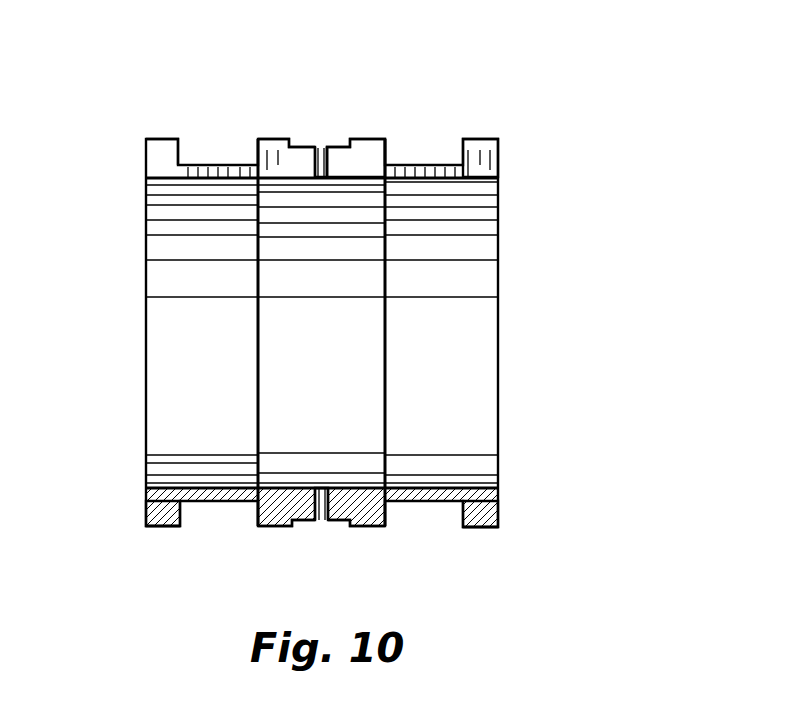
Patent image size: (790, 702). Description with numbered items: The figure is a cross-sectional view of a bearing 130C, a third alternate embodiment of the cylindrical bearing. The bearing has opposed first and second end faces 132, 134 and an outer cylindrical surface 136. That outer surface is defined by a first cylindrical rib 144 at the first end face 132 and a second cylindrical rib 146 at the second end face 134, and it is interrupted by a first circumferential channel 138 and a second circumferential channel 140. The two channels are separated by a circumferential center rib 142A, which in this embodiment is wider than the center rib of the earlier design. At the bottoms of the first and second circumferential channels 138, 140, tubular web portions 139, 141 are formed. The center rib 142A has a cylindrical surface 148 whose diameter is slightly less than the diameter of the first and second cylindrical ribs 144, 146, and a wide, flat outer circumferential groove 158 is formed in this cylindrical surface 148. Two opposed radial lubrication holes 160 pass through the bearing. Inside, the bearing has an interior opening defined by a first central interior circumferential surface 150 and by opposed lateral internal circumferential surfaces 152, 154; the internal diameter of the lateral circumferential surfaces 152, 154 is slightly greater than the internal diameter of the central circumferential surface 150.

The bearing 130C is at (512, 162).
The first end face 132 is at (146, 342).
The second end face 134 is at (500, 310).
The outer cylindrical surface 136 is at (163, 528).
The first circumferential channel 138 is at (424, 164).
The tubular web portion 139 is at (435, 178).
The second circumferential channel 140 is at (207, 165).
The tubular web portion 141 is at (193, 178).
The center rib 142A is at (349, 160).
The first cylindrical rib 144 is at (150, 527).
The second cylindrical rib 146 is at (498, 530).
The cylindrical surface 148 is at (160, 139).
The first central interior circumferential surface 150 is at (348, 487).
The lateral internal circumferential surface 152 is at (207, 488).
The lateral internal circumferential surface 154 is at (462, 489).
The outer circumferential groove 158 is at (338, 139).
The radial lubrication hole 160 is at (324, 145).